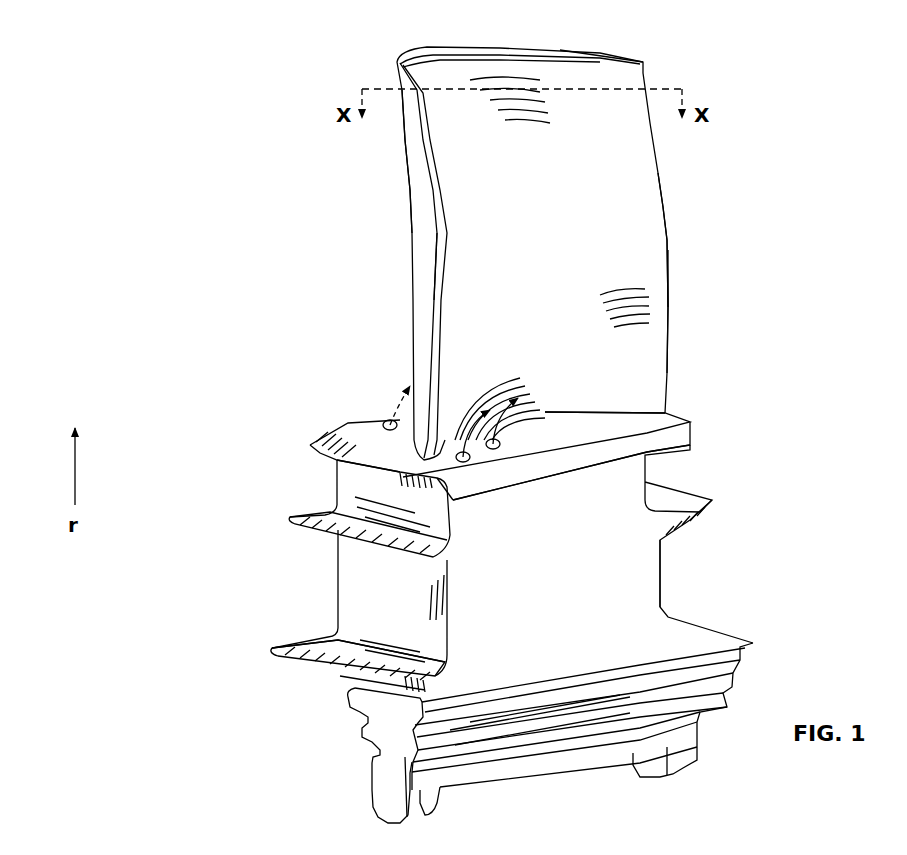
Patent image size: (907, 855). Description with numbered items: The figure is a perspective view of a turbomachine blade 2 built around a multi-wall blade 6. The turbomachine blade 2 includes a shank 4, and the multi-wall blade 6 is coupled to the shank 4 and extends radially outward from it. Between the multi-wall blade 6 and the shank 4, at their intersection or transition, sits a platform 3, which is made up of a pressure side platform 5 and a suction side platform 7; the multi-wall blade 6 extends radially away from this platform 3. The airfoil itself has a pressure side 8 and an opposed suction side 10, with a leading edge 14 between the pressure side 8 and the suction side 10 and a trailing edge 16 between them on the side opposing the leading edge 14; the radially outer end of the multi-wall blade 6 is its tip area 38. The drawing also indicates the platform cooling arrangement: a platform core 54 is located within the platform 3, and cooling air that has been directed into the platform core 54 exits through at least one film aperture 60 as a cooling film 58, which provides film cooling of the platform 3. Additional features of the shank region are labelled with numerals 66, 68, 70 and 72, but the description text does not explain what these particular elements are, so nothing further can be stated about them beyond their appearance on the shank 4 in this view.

The turbomachine blade 2 is at (186, 85).
The platform 3 is at (350, 461).
The shank 4 is at (492, 562).
The pressure side platform 5 is at (563, 430).
The multi-wall blade 6 is at (533, 204).
The suction side platform 7 is at (358, 428).
The pressure side 8 is at (643, 280).
The suction side 10 is at (400, 215).
The leading edge 14 is at (418, 283).
The trailing edge 16 is at (663, 190).
The tip area 38 is at (610, 48).
The platform core 54 is at (595, 455).
The cooling film 58 is at (392, 383).
The film aperture 60 is at (388, 420).
The lower shank lobe 66 is at (467, 565).
The shank side wall 68 is at (748, 527).
The platform front edge 70 is at (558, 465).
The upper shank lobe 72 is at (337, 487).